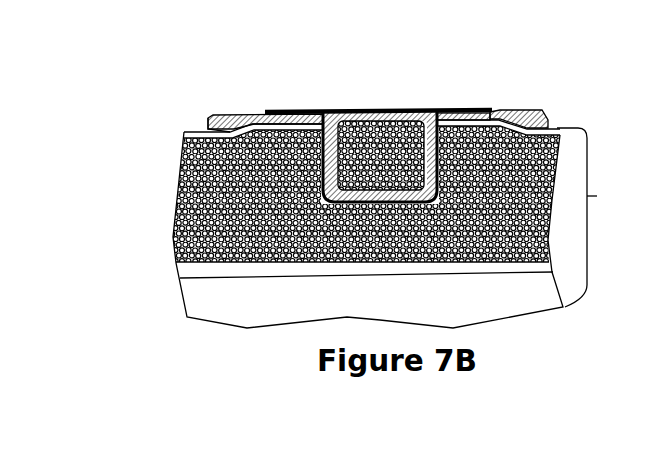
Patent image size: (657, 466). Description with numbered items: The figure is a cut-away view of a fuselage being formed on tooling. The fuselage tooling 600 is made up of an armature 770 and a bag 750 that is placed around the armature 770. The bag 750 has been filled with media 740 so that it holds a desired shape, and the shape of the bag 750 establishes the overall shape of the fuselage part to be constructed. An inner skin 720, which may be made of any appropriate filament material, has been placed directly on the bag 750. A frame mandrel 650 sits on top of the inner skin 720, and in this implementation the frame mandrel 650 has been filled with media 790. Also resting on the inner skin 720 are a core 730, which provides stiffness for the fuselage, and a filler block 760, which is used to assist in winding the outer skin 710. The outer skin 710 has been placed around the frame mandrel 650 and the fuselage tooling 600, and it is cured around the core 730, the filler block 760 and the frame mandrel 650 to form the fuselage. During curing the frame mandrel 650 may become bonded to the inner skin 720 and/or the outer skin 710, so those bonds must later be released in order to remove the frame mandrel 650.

The fuselage tooling 600 is at (405, 228).
The frame mandrel 650 is at (401, 153).
The outer skin 710 is at (330, 103).
The inner skin 720 is at (190, 120).
The core 730 is at (226, 111).
The media 740 is at (233, 204).
The bag 750 is at (174, 137).
The filler block 760 is at (532, 110).
The armature 770 is at (170, 291).
The media 790 is at (423, 106).